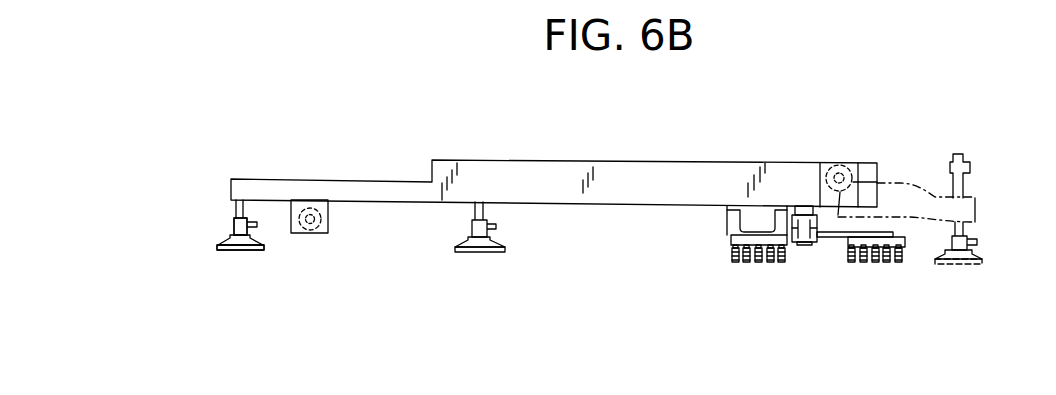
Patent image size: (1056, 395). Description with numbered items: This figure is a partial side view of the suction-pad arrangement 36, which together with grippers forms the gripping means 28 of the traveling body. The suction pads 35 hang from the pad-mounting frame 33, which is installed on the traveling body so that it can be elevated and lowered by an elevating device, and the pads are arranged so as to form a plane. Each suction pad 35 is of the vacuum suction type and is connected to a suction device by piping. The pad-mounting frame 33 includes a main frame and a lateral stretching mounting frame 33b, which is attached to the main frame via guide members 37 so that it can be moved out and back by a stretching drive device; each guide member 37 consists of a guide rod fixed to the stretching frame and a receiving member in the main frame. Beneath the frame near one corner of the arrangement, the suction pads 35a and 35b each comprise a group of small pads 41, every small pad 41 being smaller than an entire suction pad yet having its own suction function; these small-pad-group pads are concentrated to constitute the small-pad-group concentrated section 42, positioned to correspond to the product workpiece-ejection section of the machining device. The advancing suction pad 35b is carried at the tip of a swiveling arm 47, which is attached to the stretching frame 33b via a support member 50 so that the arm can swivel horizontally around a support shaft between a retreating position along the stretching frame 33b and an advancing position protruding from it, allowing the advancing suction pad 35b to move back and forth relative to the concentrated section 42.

The pad-mounting frame 33 is at (514, 158).
The stretching mounting frame 33b is at (708, 178).
The suction pad 35 is at (243, 252).
The suction pad 35a is at (742, 272).
The advancing suction pad 35b is at (866, 275).
The suction-pad arrangement 36 is at (213, 236).
The gripping means 28 is at (215, 252).
The guide member 37 is at (308, 235).
The small pad 41 is at (782, 264).
The small-pad-group concentrated section 42 is at (715, 256).
The swiveling arm 47 is at (833, 238).
The support member 50 is at (810, 246).